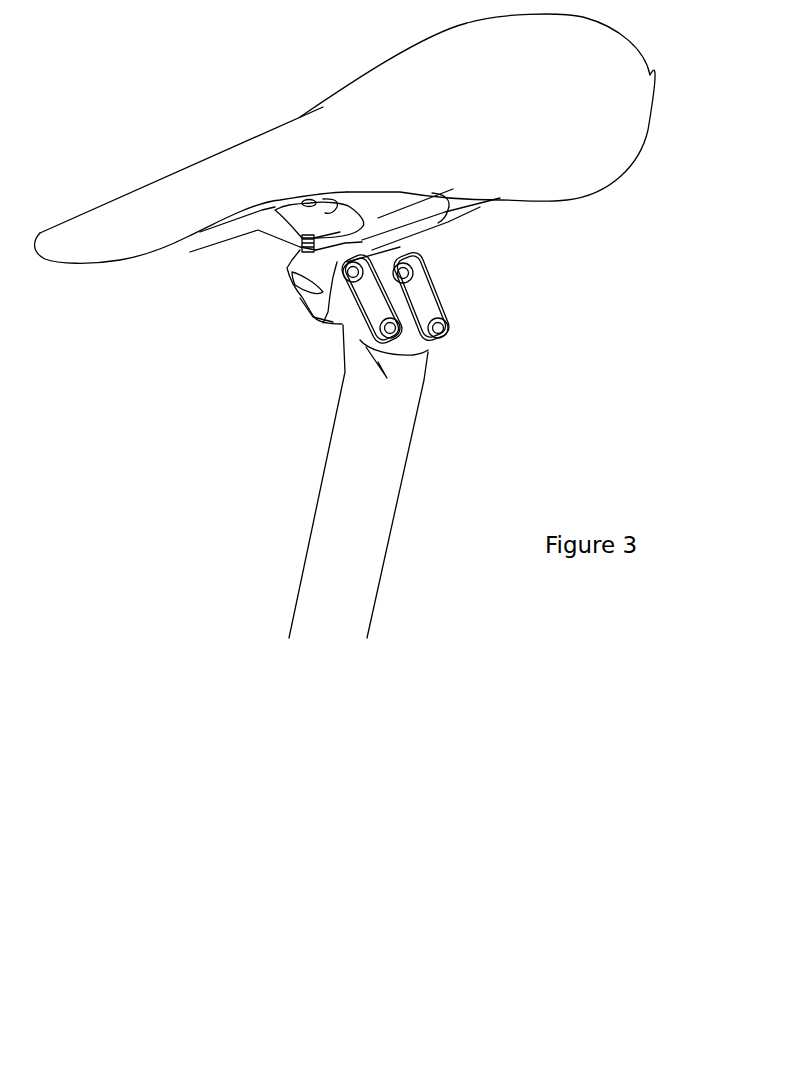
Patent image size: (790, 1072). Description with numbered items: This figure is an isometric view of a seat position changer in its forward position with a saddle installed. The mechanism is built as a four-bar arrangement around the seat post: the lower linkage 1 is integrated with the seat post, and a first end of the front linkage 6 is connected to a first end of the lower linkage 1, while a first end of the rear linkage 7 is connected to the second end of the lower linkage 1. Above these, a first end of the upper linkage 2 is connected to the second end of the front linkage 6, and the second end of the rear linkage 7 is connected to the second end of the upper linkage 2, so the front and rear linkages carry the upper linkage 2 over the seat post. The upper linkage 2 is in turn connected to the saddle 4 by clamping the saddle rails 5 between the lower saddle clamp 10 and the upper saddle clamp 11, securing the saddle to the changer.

The lower linkage 1 is at (372, 444).
The upper linkage 2 is at (308, 275).
The saddle 4 is at (246, 175).
The saddle rails 5 is at (247, 242).
The front linkage 6 is at (318, 310).
The rear linkage 7 is at (423, 302).
The lower saddle clamp 10 is at (409, 243).
The upper saddle clamp 11 is at (409, 212).